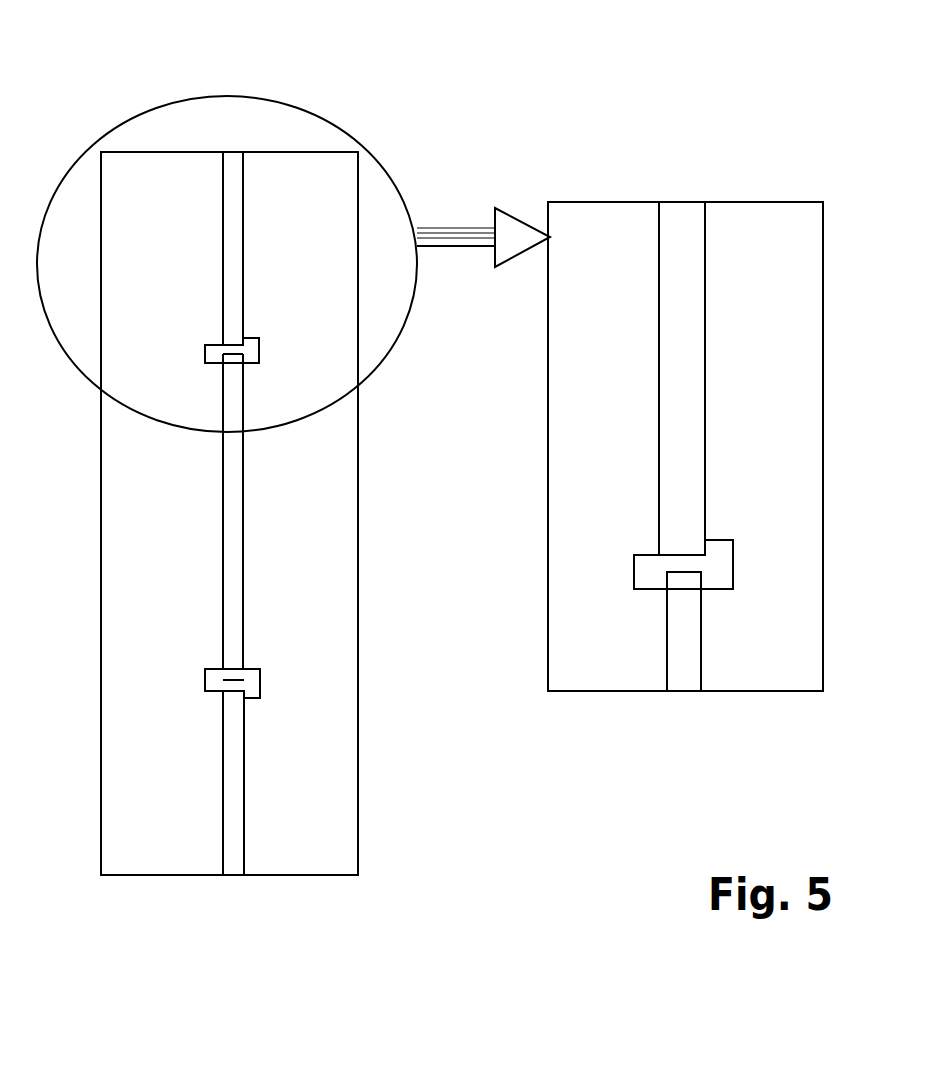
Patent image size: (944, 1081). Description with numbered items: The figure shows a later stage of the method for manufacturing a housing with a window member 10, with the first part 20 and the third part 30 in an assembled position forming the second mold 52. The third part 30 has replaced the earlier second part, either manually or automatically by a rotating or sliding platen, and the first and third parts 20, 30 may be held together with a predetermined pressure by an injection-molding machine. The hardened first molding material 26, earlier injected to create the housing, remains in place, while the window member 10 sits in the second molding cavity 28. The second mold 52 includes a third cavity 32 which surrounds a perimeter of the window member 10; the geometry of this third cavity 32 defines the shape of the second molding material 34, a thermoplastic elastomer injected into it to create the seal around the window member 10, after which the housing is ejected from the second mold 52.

The window member 10 is at (685, 691).
The first part 20 is at (585, 202).
The first molding material 26 is at (677, 202).
The second molding cavity 28 is at (642, 575).
The third part 30 is at (787, 202).
The third cavity 32 is at (722, 570).
The second molding material 34 is at (725, 550).
The second mold 52 is at (352, 97).